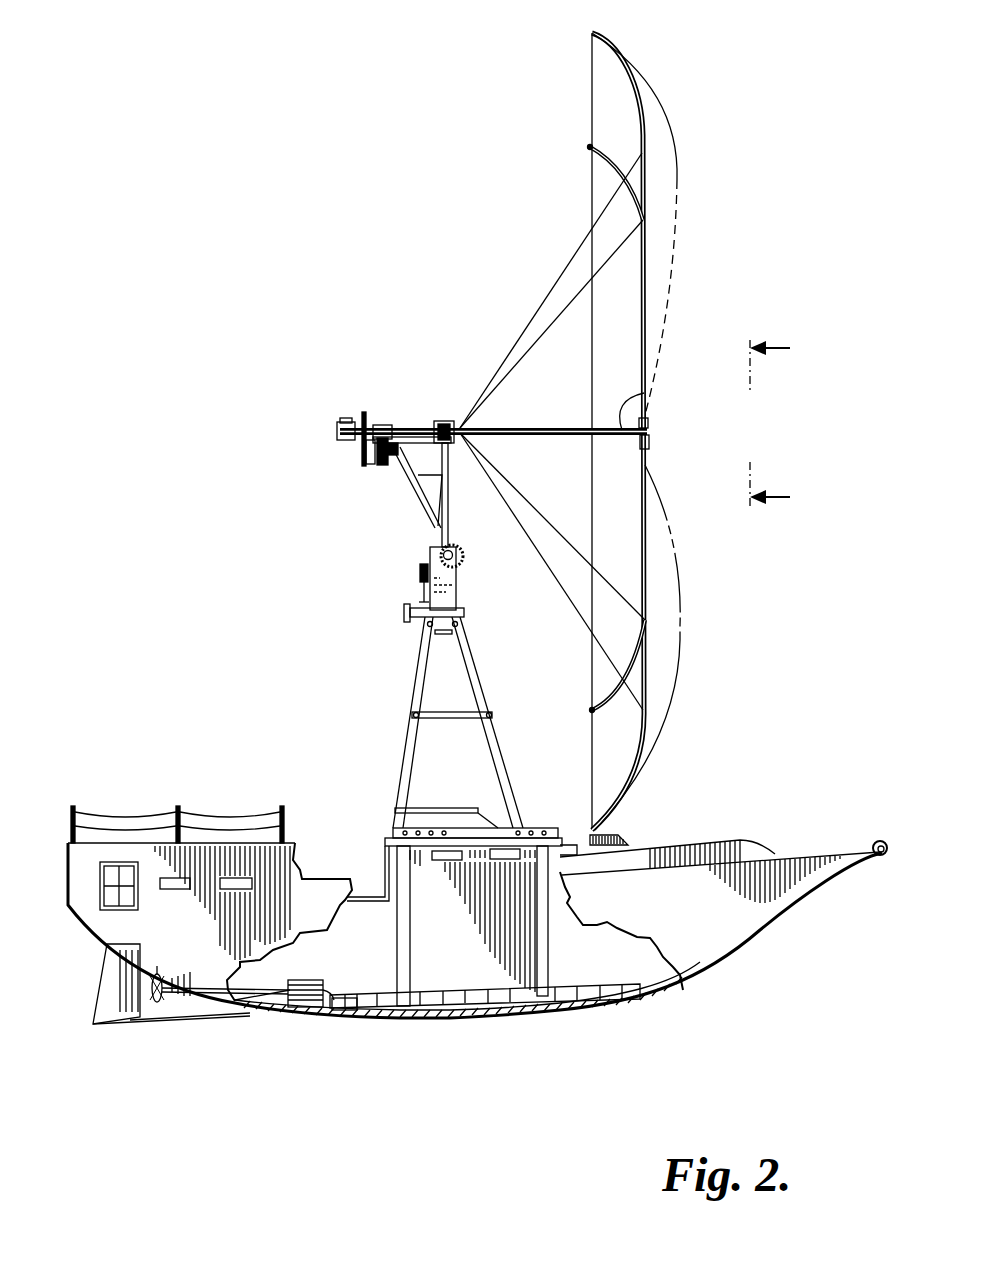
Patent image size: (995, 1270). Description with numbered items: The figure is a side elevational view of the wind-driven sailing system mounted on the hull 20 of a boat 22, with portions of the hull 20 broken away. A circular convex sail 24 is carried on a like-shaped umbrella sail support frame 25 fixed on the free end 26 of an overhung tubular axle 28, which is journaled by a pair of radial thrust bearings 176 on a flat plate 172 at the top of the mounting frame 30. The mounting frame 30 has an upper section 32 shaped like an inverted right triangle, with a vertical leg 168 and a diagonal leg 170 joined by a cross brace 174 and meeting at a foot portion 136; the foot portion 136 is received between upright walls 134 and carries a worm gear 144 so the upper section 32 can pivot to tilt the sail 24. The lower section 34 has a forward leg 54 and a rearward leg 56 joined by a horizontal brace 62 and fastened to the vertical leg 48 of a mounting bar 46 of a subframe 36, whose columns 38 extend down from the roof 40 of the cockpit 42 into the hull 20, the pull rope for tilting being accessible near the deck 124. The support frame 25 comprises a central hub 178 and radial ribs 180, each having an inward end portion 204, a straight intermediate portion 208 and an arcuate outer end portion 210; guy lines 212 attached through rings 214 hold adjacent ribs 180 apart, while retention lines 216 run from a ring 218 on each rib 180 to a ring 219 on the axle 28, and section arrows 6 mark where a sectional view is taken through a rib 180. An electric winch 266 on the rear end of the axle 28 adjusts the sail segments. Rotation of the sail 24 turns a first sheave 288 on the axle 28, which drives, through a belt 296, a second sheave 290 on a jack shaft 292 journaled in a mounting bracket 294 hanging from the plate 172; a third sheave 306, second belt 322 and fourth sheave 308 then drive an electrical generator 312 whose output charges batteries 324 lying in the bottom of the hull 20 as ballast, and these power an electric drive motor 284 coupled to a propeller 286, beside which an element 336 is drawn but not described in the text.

The section line 6- 6 is at (784, 424).
The hull 20 is at (748, 927).
The boat 22 is at (812, 910).
The sail 24 is at (678, 172).
The sail support frame 25 is at (608, 355).
The free end of axle 26 is at (646, 400).
The overhung axle 28 is at (553, 422).
The mounting frame 30 is at (403, 702).
The mounting frame upper section 32 is at (420, 530).
The mounting frame lower section 34 is at (405, 772).
The subframe 36 is at (548, 968).
The columns 38 is at (408, 944).
The roof 40 is at (396, 836).
The cockpit 42 is at (634, 834).
The mounting bars 46 is at (545, 828).
The vertical leg 48 is at (503, 828).
The forward leg 54 is at (500, 735).
The rearward leg 56 is at (407, 732).
The brace 62 is at (440, 720).
The deck 124 is at (366, 896).
The upright walls 134 is at (450, 598).
The foot portion 136 is at (430, 536).
The worm gear 144 is at (460, 562).
The vertical leg 168 is at (450, 516).
The diagonal leg 170 is at (482, 512).
The flat plate 172 is at (453, 458).
The cross brace 174 is at (424, 480).
The radial thrust bearings 176 is at (387, 422).
The central hub 178 is at (648, 440).
The radial ribs 180 is at (648, 262).
The inward end portion 204 is at (648, 412).
The intermediate portion 208 is at (648, 306).
The arcuate outer end portion 210 is at (626, 70).
The guy line 212 is at (590, 80).
The rings 214 is at (590, 147).
The retention line 216 is at (572, 252).
The ring 218 is at (640, 142).
The ring 219 is at (458, 422).
The electric winch 266 is at (341, 430).
The electric drive motor 284 is at (306, 1007).
The propeller 286 is at (152, 1002).
The first sheave 288 is at (360, 425).
The second sheave 290 is at (370, 465).
The jack shaft 292 is at (380, 472).
The mounting bracket 294 is at (390, 472).
The belt 296 is at (352, 443).
The third sheave 306 is at (406, 478).
The fourth sheave 308 is at (418, 438).
The electrical generator 312 is at (366, 455).
The second belt 322 is at (432, 494).
The batteries 324 is at (474, 1003).
The propeller shaft 336 is at (266, 1008).